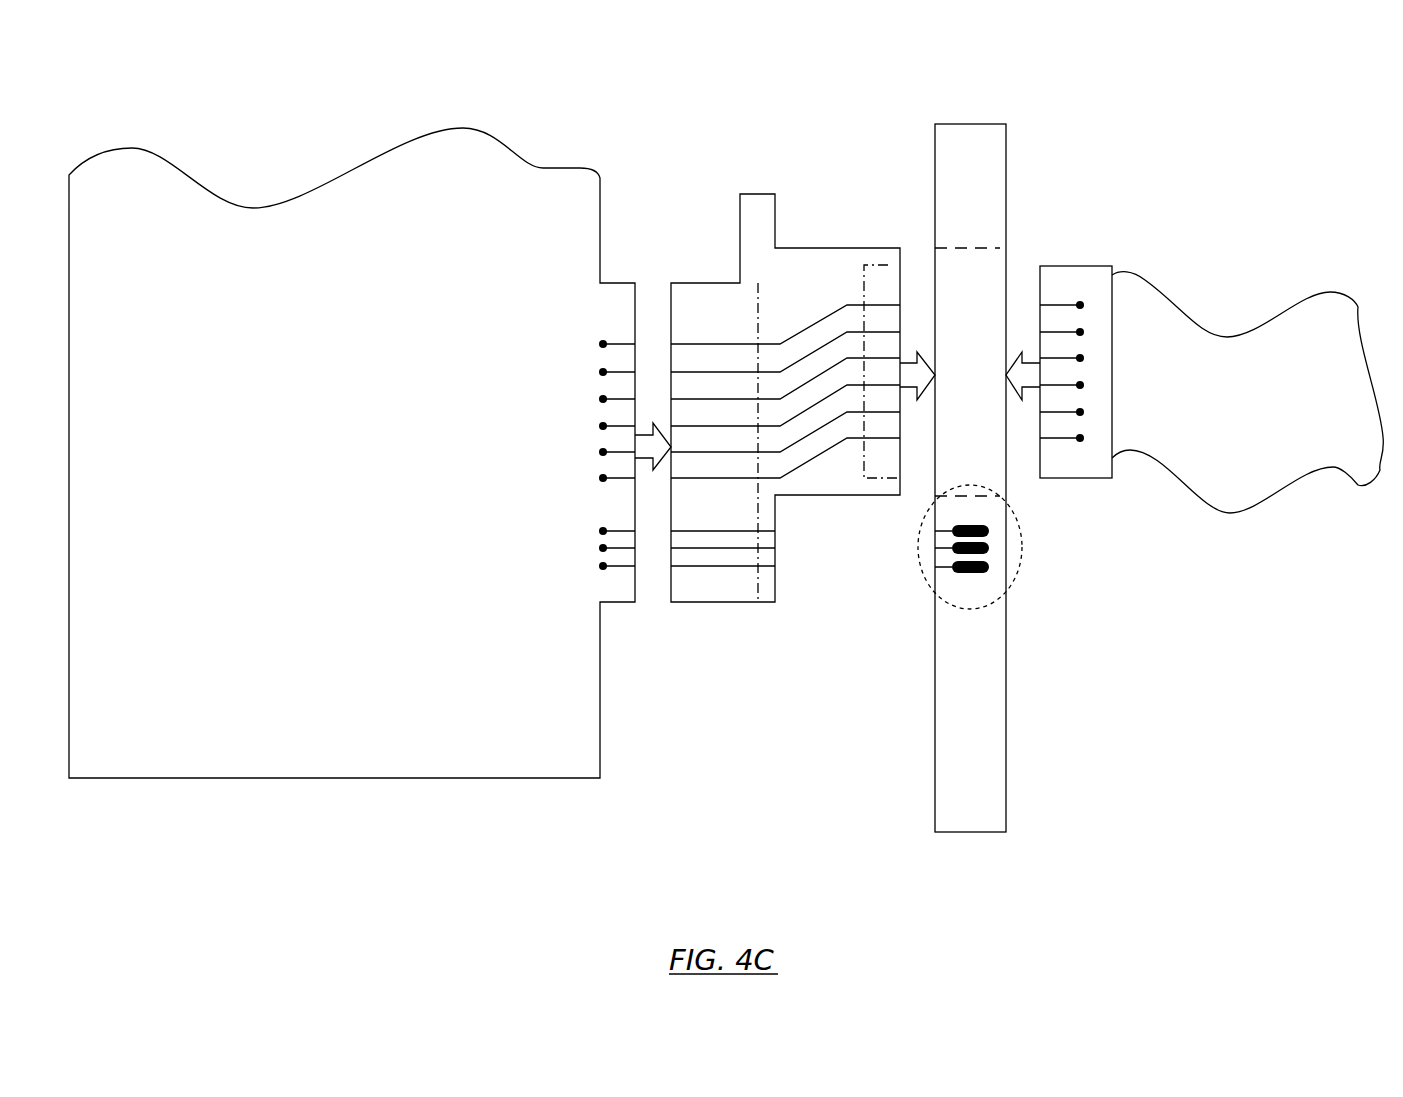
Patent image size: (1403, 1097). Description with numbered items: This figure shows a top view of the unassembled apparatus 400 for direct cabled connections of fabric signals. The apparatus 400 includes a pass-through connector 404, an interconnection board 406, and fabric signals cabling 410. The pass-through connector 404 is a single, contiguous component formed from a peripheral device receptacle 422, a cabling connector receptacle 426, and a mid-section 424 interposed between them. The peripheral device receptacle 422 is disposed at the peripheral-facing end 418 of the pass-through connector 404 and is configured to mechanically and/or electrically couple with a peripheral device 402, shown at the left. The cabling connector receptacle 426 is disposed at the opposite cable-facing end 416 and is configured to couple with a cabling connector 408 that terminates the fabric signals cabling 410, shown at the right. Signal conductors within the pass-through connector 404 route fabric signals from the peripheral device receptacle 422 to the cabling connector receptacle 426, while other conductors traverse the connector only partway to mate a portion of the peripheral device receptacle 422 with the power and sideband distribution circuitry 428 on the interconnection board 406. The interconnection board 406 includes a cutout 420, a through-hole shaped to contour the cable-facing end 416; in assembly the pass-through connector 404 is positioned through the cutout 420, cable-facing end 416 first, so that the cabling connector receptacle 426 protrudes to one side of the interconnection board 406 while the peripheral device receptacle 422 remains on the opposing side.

The apparatus 400 is at (1103, 189).
The peripheral device 402 is at (382, 472).
The pass-through connector 404 is at (671, 742).
The interconnection board 406 is at (970, 796).
The cabling connector 408 is at (1077, 459).
The fabric signals cabling 410 is at (1293, 424).
The cable-facing end 416 is at (900, 620).
The peripheral-facing end 418 is at (670, 725).
The cutout 420 is at (970, 372).
The peripheral device receptacle 422 is at (713, 308).
The mid-section 424 is at (811, 261).
The cabling connector receptacle 426 is at (882, 282).
The power and sideband distribution circuitry 428 is at (1018, 568).